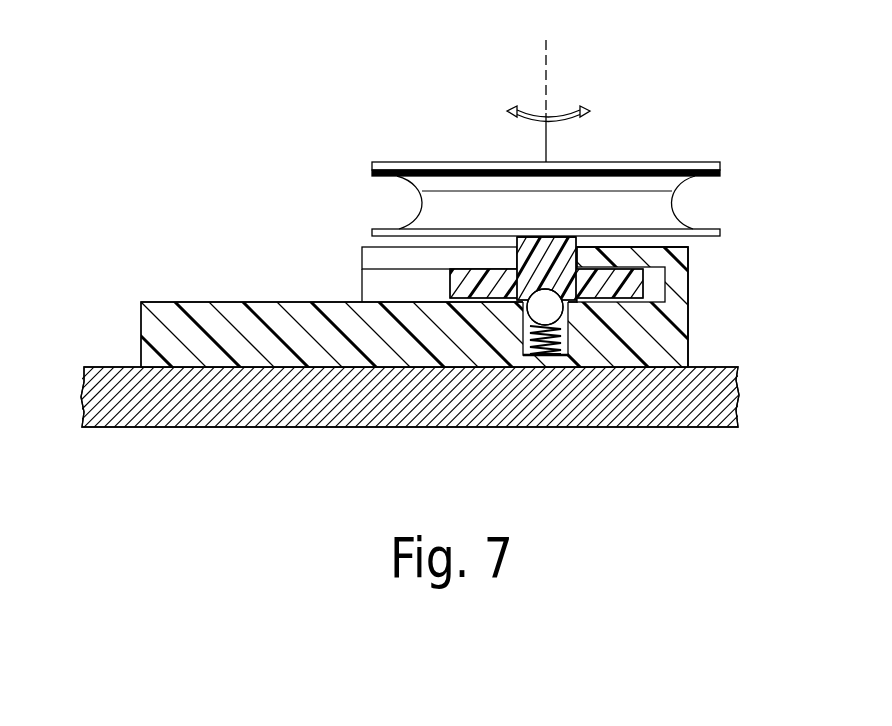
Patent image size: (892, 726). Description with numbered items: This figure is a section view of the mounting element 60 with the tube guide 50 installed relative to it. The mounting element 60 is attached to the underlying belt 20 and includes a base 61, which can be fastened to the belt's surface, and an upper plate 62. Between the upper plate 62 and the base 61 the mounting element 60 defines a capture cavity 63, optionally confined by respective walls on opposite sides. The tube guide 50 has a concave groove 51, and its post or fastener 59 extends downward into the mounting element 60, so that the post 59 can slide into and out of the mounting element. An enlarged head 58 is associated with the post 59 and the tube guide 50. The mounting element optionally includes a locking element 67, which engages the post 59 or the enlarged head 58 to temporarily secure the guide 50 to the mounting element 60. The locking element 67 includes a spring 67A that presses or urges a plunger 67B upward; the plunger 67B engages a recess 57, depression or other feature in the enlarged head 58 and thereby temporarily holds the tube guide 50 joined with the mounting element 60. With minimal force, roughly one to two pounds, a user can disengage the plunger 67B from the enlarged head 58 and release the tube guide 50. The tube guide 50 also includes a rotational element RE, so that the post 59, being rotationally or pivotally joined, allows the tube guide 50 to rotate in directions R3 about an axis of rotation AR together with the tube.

The belt 20 is at (110, 367).
The tube guide 50 is at (720, 170).
The concave groove 51 is at (673, 198).
The recess 57 is at (568, 286).
The enlarged head 58 is at (450, 283).
The post or fastener 59 is at (522, 243).
The mounting element 60 is at (722, 323).
The base 61 is at (141, 323).
The upper plate 62 is at (685, 253).
The capture cavity 63 is at (368, 290).
The locking element 67 is at (550, 347).
The spring 67A is at (524, 328).
The plunger 67B is at (548, 312).
The rotational element RE is at (517, 73).
The axis of rotation AR is at (549, 90).
The rotation directions R3 is at (558, 105).